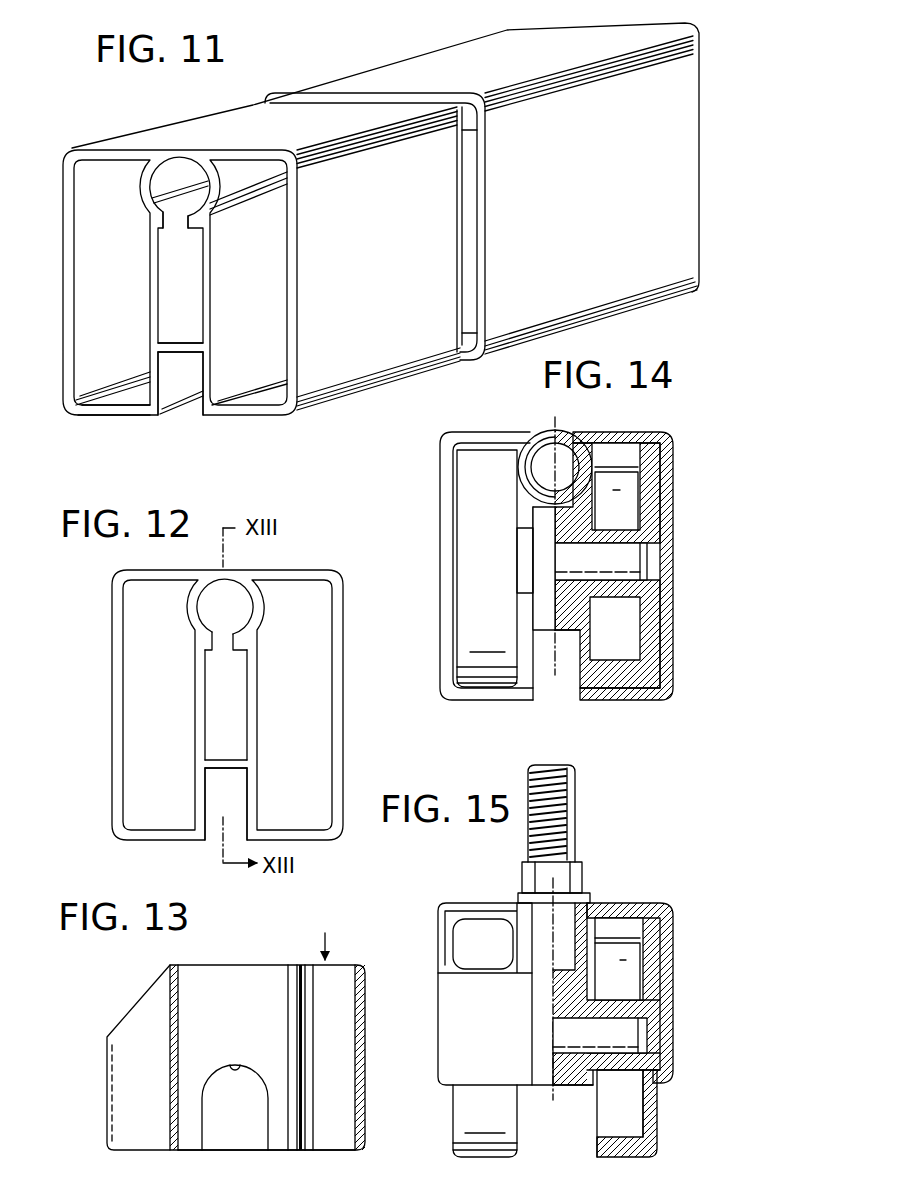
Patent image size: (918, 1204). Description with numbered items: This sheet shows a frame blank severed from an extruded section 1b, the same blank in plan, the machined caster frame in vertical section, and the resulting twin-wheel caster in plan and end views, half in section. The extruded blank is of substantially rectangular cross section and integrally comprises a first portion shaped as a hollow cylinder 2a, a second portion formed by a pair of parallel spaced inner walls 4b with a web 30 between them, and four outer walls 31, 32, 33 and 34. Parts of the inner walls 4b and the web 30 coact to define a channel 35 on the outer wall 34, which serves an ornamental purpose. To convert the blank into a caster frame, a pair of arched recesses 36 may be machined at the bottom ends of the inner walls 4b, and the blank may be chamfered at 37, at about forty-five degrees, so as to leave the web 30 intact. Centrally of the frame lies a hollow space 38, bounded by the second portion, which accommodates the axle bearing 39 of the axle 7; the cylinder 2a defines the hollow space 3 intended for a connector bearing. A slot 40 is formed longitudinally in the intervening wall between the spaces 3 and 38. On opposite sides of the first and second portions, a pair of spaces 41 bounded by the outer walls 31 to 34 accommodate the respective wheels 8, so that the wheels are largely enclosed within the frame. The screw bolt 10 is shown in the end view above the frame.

In FIG. 11, the extruded section 1b is at (397, 23).
In FIG. 13, the extruded section 1b is at (333, 934).
In FIG. 14, the extruded section 1b is at (667, 441).
In FIG. 15, the extruded section 1b is at (677, 903).
In FIG. 11, the hollow cylinder 2a is at (217, 185).
In FIG. 12, the hollow cylinder 2a is at (262, 618).
In FIG. 13, the hollow cylinder 2a is at (340, 1130).
In FIG. 12, the hollow space 3 is at (227, 597).
In FIG. 11, the inner walls 4b is at (262, 287).
In FIG. 12, the inner walls 4b is at (260, 705).
In FIG. 13, the inner walls 4b is at (210, 987).
In FIG. 14, the axle 7 is at (627, 558).
In FIG. 15, the axle 7 is at (625, 1033).
In FIG. 14, the wheels 8 is at (457, 653).
In FIG. 15, the wheels 8 is at (455, 1131).
In FIG. 14, the screw bolt 10 is at (547, 462).
In FIG. 15, the screw bolt 10 is at (576, 826).
In FIG. 11, the web 30 is at (187, 342).
In FIG. 12, the web 30 is at (235, 763).
In FIG. 13, the web 30 is at (173, 1043).
In FIG. 11, the outer wall 31 is at (72, 340).
In FIG. 12, the outer wall 31 is at (112, 787).
In FIG. 13, the outer wall 31 is at (238, 1127).
In FIG. 11, the outer wall 32 is at (163, 137).
In FIG. 12, the outer wall 32 is at (302, 570).
In FIG. 13, the outer wall 32 is at (365, 1073).
In FIG. 15, the outer wall 32 is at (437, 1043).
In FIG. 11, the outer wall 33 is at (388, 362).
In FIG. 12, the outer wall 33 is at (343, 730).
In FIG. 11, the outer wall 34 is at (110, 418).
In FIG. 12, the outer wall 34 is at (163, 842).
In FIG. 13, the outer wall 34 is at (112, 1077).
In FIG. 11, the channel 35 is at (187, 418).
In FIG. 12, the channel 35 is at (227, 773).
In FIG. 13, the arched recesses 36 is at (242, 1063).
In FIG. 13, the chamfer 37 is at (115, 1027).
In FIG. 14, the chamfer 37 is at (488, 700).
In FIG. 15, the chamfer 37 is at (440, 927).
In FIG. 12, the hollow space 38 is at (220, 733).
In FIG. 14, the axle bearing 39 is at (547, 620).
In FIG. 15, the axle bearing 39 is at (577, 1082).
In FIG. 11, the slot 40 is at (178, 223).
In FIG. 12, the slot 40 is at (225, 643).
In FIG. 13, the slot 40 is at (293, 1130).
In FIG. 12, the spaces 41 is at (140, 610).